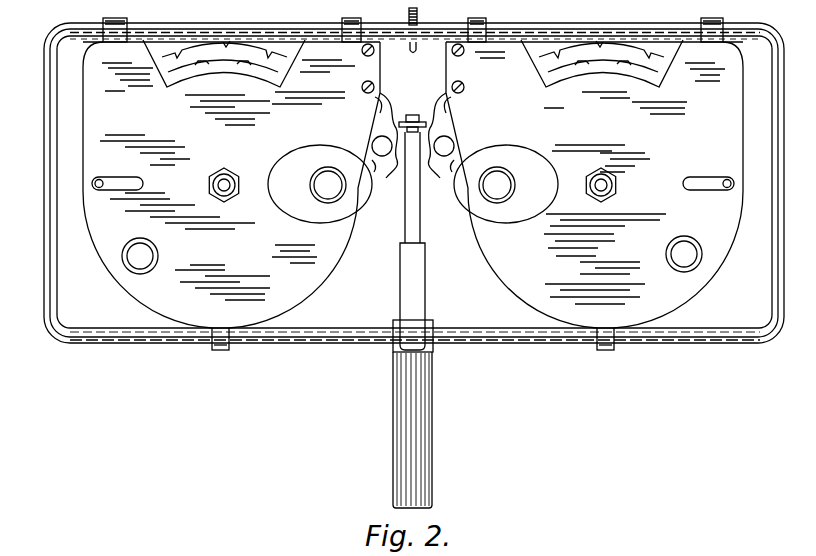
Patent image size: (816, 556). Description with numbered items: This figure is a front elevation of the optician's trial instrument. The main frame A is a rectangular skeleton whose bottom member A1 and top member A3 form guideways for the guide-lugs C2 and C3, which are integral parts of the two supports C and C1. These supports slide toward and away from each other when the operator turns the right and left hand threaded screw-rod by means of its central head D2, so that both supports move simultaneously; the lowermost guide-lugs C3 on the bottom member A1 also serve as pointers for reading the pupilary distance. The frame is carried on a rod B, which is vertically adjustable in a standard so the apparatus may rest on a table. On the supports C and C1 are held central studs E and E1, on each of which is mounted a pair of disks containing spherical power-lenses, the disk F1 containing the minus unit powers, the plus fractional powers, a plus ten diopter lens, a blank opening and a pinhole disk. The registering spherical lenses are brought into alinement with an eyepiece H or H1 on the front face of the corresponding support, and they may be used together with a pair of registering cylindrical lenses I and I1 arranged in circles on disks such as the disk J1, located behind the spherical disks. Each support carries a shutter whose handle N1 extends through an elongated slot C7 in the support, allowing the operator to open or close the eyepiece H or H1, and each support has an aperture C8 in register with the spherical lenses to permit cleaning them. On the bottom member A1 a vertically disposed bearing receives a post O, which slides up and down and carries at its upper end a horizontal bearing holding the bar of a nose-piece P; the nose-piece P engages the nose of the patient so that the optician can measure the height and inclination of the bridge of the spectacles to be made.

The main frame A is at (52, 221).
The bottom member A1 is at (352, 340).
The top member A3 is at (569, 30).
The rod B is at (432, 441).
The support C is at (594, 185).
The support C1 is at (272, 119).
The guide-lug C2 is at (115, 30).
The guide-lug C3 is at (222, 350).
The elongated slot C7 is at (117, 191).
The aperture C8 is at (131, 270).
The head D2 is at (418, 13).
The stud E is at (614, 187).
The stud E1 is at (220, 187).
The disk F1 is at (243, 62).
The eyepiece H is at (517, 162).
The eyepiece H1 is at (333, 157).
The lens I is at (438, 106).
The lens I1 is at (379, 112).
The disk J1 is at (376, 163).
The handle N1 is at (97, 181).
The post O is at (406, 219).
The nose-piece P is at (415, 115).